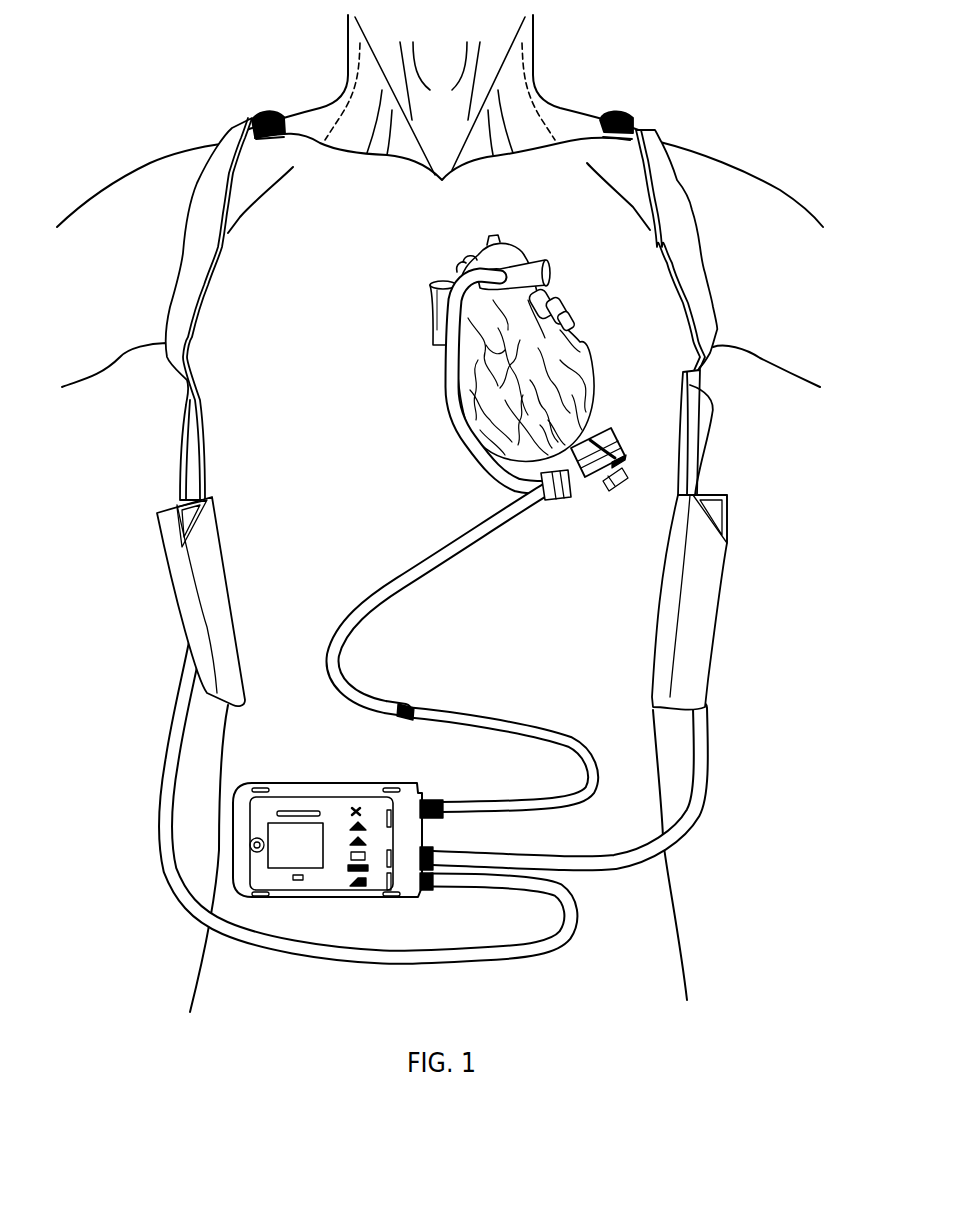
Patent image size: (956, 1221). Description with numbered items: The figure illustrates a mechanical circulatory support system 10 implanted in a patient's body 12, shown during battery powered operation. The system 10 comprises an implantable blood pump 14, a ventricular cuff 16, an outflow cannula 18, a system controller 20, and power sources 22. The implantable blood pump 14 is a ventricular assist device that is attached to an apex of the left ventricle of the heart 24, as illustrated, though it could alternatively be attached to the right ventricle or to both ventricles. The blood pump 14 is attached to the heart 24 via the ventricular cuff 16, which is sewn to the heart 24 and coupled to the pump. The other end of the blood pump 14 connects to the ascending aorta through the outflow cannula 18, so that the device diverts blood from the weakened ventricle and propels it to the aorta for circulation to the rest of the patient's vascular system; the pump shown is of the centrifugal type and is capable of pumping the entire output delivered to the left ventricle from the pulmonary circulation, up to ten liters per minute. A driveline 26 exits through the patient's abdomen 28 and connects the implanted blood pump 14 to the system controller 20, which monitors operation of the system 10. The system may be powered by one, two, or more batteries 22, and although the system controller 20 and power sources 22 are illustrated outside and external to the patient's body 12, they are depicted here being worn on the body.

The mechanical circulatory support system 10 is at (735, 462).
The patient's body 12 is at (95, 380).
The implantable blood pump 14 is at (613, 487).
The ventricular cuff 16 is at (593, 430).
The outflow cannula 18 is at (452, 427).
The system controller 20 is at (233, 810).
The power sources 22 is at (165, 573).
The heart 24 is at (567, 368).
The driveline 26 is at (457, 559).
The patient's abdomen 28 is at (405, 705).